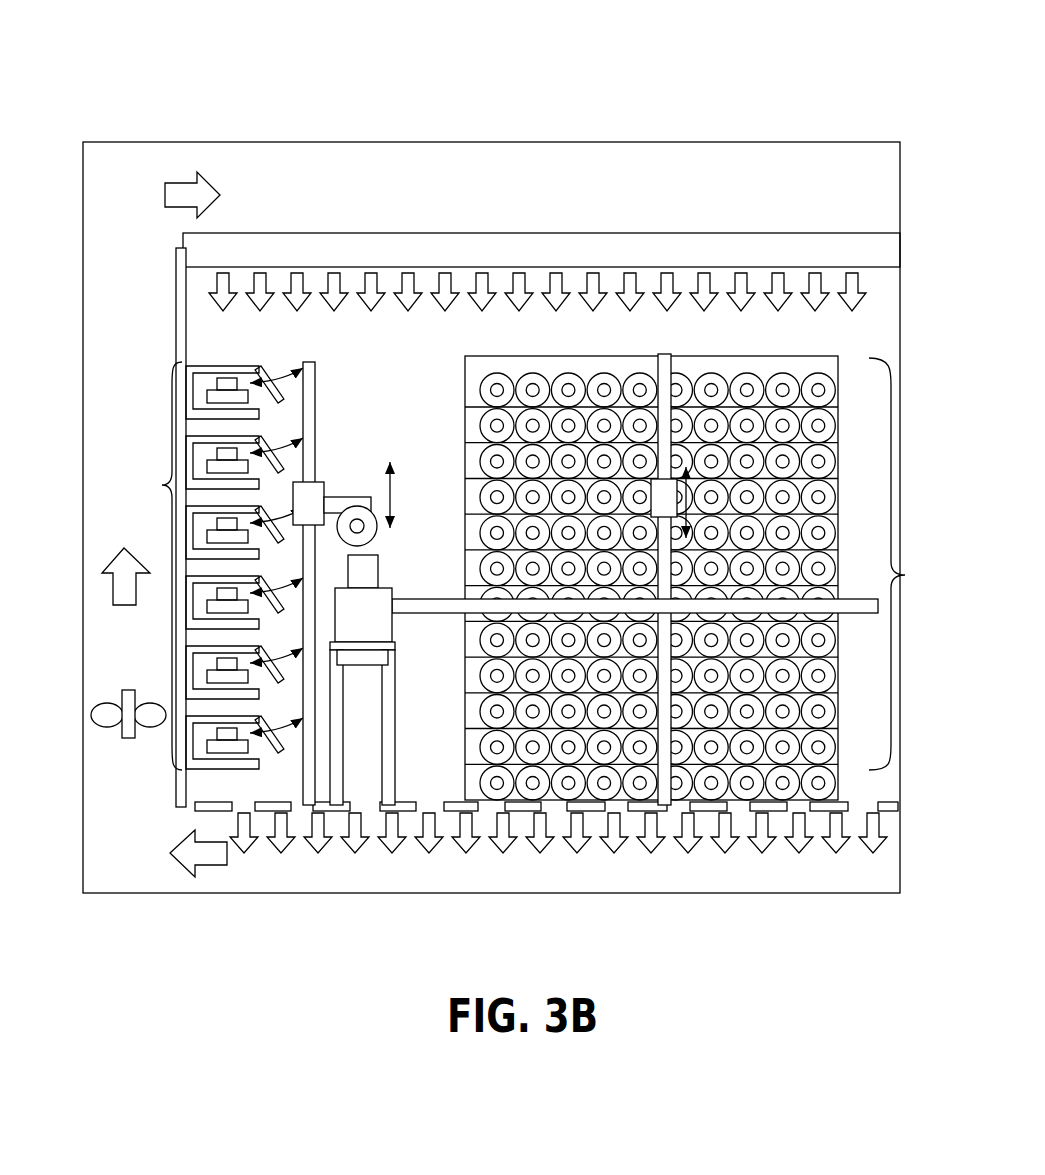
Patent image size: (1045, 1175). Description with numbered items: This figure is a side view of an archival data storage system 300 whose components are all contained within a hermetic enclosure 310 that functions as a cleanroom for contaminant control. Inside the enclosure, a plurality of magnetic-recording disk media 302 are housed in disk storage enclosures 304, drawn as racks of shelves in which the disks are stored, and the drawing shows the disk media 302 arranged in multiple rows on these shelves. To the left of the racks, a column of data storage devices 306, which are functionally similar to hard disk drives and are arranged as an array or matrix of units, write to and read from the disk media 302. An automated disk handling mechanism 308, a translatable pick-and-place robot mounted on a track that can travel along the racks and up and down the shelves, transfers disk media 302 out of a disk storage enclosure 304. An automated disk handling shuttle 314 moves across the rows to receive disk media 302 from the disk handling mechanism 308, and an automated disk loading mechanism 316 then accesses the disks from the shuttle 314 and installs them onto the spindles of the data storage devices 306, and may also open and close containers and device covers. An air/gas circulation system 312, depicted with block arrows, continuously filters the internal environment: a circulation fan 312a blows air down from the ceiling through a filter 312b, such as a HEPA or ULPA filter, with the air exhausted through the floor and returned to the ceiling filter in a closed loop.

The data storage system 300 is at (222, 66).
The magnetic-recording disk media 302 is at (706, 553).
The disk storage enclosure 304 is at (825, 356).
The data storage device 306 is at (211, 566).
The automated disk handling mechanism 308 is at (667, 497).
The hermetic enclosure 310 is at (825, 140).
The air/gas circulation system 312 is at (183, 192).
The circulation fan 312a is at (113, 712).
The filter 312b is at (417, 243).
The automated disk handling shuttle 314 is at (373, 607).
The automated disk loading mechanism 316 is at (312, 490).